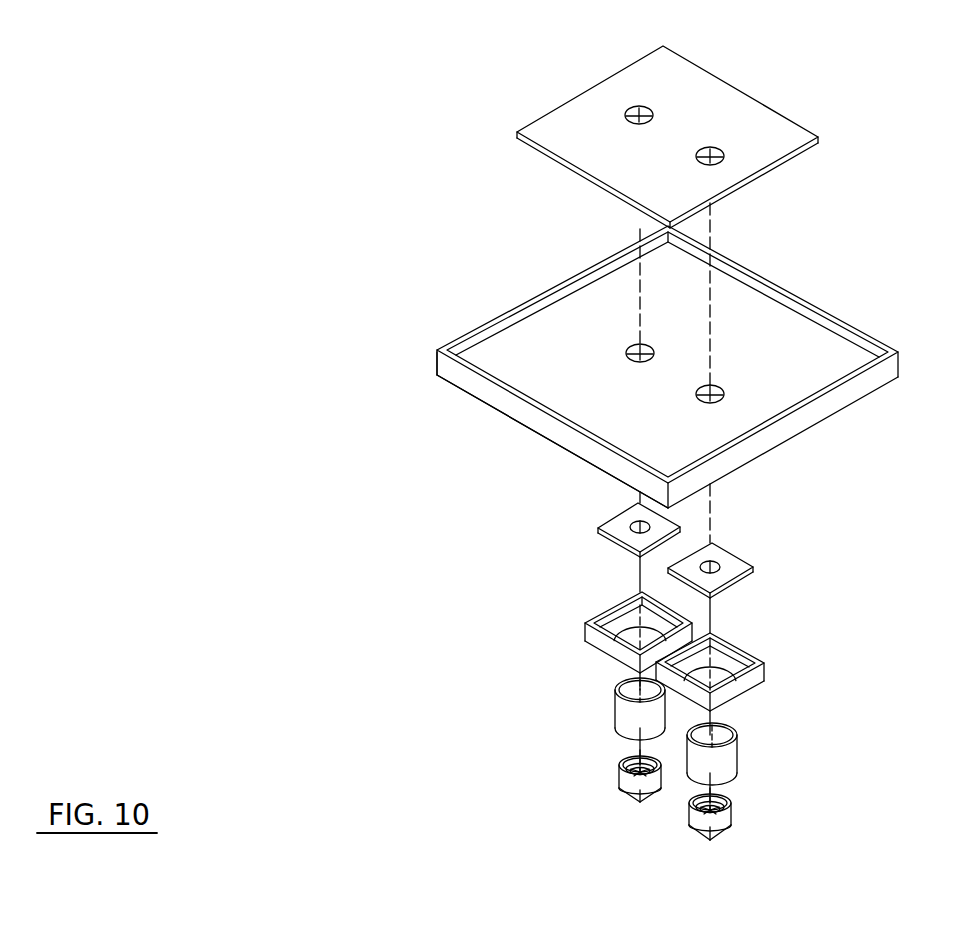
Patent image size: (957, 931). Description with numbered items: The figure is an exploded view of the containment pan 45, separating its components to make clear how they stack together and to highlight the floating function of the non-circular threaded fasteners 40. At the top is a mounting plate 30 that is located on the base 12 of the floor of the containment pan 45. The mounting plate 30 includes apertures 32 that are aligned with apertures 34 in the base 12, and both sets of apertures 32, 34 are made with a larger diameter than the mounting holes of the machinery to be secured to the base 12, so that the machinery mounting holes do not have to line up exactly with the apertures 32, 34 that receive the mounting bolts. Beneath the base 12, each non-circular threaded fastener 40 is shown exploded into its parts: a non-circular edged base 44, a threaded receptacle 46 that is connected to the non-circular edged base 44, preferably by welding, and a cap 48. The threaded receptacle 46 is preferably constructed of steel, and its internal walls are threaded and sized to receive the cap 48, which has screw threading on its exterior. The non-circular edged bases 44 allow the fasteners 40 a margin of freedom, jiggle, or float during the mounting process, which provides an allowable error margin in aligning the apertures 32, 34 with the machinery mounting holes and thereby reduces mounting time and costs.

The base 12 is at (763, 407).
The mounting plate 30 is at (643, 170).
The aperture 32 is at (720, 150).
The aperture 34 is at (723, 387).
The non-circular threaded fastener 40 is at (620, 528).
The non-circular edged base 44 is at (637, 618).
The containment pan 45 is at (460, 380).
The threaded receptacle 46 is at (628, 718).
The cap 48 is at (620, 782).